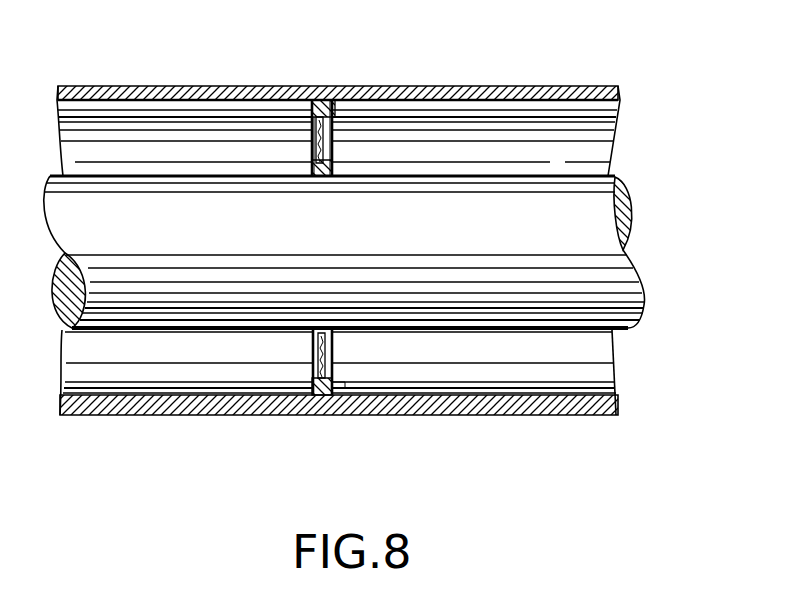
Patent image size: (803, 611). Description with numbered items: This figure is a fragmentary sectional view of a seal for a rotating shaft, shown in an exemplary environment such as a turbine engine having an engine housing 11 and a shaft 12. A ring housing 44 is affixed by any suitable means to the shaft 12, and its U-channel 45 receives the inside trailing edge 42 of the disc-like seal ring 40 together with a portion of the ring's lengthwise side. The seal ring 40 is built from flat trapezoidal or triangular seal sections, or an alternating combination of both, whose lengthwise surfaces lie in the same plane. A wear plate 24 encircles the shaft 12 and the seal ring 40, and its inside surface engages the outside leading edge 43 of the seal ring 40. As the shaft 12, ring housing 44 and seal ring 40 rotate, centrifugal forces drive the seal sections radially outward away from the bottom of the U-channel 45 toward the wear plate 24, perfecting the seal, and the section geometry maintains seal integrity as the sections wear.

The engine housing 11 is at (568, 86).
The shaft 12 is at (630, 297).
The seal ring 40 is at (362, 99).
The ring housing 44 is at (310, 166).
The U-channel 45 is at (335, 140).
The inside trailing edge 42 is at (310, 331).
The outside leading edge 43 is at (320, 396).
The wear plate 24 is at (360, 383).